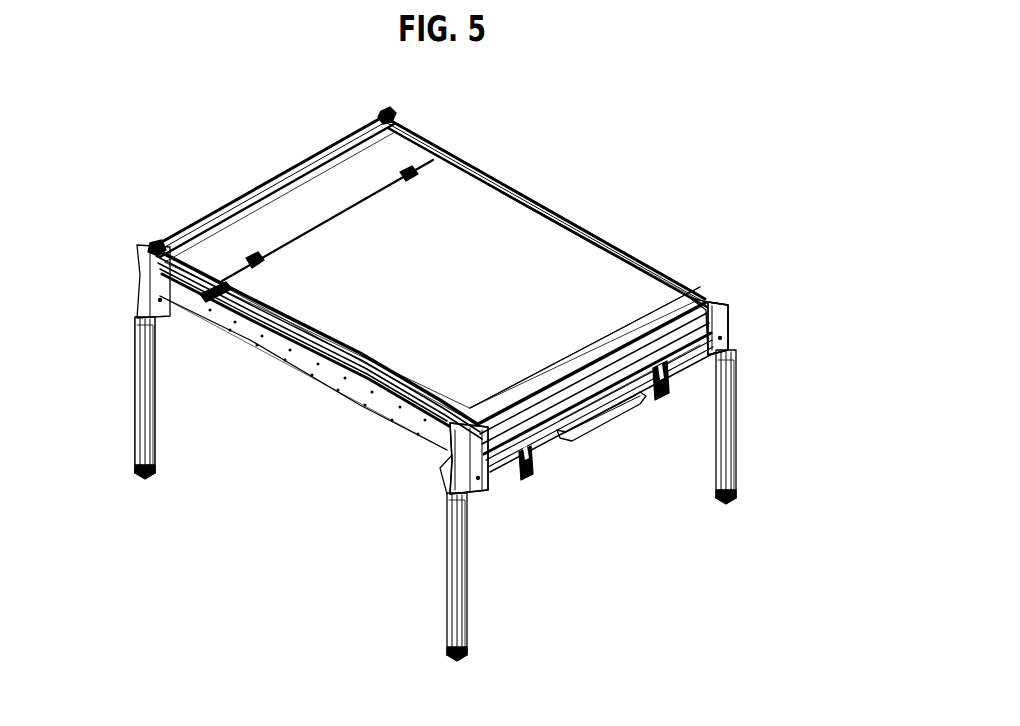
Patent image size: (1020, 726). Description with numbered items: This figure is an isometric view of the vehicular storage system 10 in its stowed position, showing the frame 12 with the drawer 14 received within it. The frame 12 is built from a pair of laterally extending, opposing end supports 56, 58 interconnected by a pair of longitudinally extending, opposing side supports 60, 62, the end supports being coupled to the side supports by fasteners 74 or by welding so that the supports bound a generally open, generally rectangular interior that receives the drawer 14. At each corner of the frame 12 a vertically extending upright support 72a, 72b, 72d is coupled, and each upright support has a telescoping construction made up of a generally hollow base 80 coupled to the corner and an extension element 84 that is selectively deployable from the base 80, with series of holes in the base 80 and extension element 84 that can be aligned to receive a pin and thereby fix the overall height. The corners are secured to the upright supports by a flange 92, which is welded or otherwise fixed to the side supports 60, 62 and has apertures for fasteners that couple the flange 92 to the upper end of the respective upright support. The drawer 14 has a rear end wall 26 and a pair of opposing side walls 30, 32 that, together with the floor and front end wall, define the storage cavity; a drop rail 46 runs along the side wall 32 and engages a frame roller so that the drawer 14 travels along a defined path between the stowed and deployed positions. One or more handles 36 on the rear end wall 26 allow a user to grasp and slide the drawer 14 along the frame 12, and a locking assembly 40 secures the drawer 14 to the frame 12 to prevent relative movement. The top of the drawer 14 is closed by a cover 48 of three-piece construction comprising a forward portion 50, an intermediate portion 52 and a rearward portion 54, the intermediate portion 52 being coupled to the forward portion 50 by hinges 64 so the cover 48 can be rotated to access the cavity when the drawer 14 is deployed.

The vehicular storage system 10 is at (650, 192).
The frame 12 is at (132, 452).
The drawer 14 is at (290, 420).
The rear end wall 26 is at (486, 458).
The side wall 30 is at (623, 250).
The side wall 32 is at (362, 395).
The handle 36 is at (590, 440).
The locking assembly 40 is at (528, 476).
The drop rail 46 is at (452, 445).
The cover 48 is at (485, 250).
The forward portion 50 is at (403, 148).
The intermediate portion 52 is at (484, 311).
The rearward portion 54 is at (695, 300).
The end support 56 is at (728, 306).
The end support 58 is at (302, 158).
The side support 60 is at (555, 215).
The side support 62 is at (212, 305).
The hinge 64 is at (413, 182).
The upright support 72a is at (470, 630).
The upright support 72b is at (738, 400).
The upright support 72d is at (158, 445).
The fastener 74 is at (386, 110).
The hollow base 80 is at (737, 445).
The extension element 84 is at (732, 496).
The flange 92 is at (738, 330).